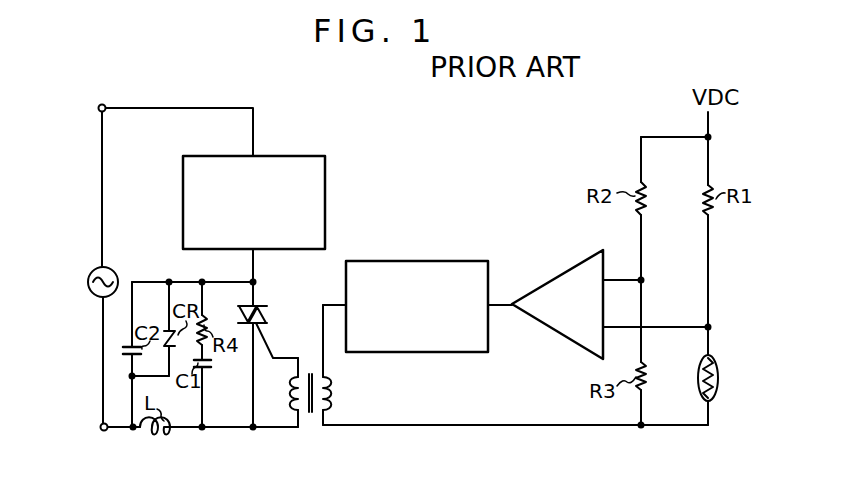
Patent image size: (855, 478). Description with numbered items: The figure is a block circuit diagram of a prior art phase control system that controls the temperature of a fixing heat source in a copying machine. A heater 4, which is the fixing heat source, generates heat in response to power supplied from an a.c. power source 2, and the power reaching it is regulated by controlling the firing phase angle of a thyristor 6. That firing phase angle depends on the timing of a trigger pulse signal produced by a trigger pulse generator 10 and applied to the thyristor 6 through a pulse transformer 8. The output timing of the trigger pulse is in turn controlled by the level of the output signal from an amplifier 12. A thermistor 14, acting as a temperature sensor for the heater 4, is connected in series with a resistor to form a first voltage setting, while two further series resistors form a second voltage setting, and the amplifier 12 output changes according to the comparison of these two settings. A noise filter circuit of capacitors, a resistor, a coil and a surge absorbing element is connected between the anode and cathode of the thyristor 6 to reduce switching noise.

The a.c. power source 2 is at (87, 283).
The heater 4 is at (263, 156).
The thyristor 6 is at (267, 305).
The pulse transformer 8 is at (310, 414).
The trigger pulse generator 10 is at (422, 261).
The amplifier 12 is at (551, 278).
The thermistor 14 is at (720, 382).